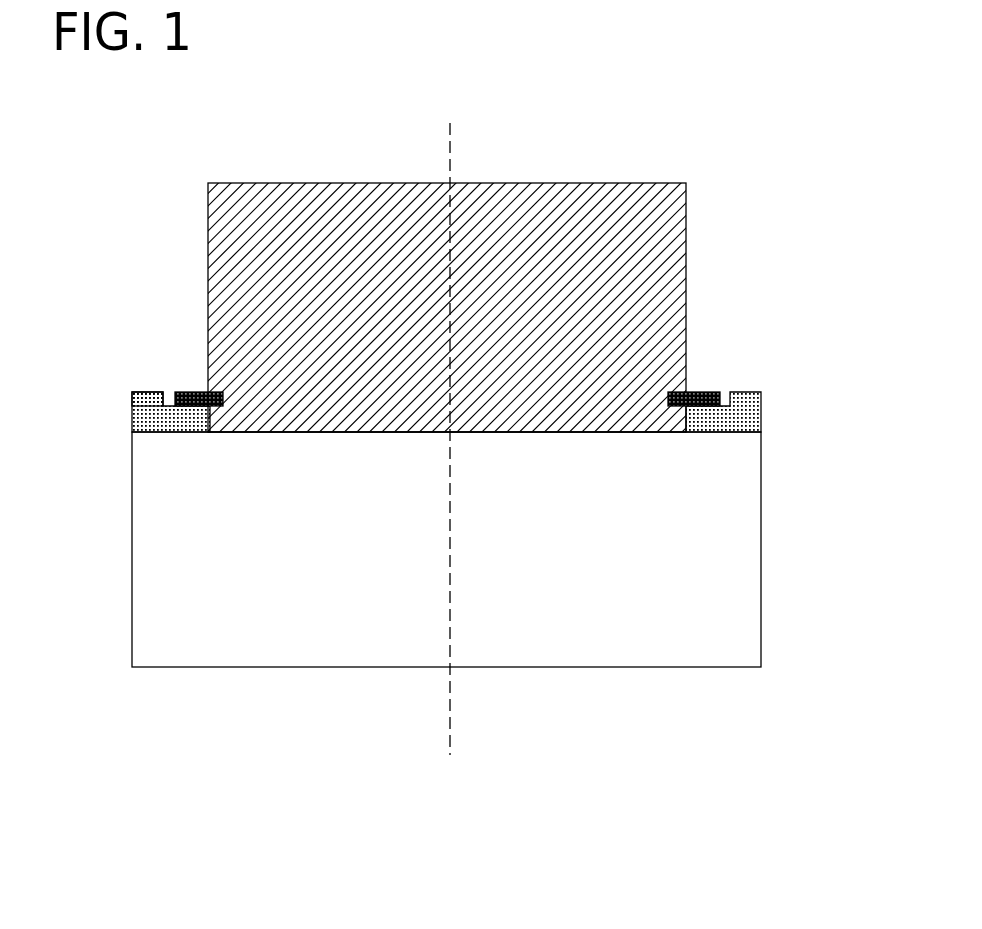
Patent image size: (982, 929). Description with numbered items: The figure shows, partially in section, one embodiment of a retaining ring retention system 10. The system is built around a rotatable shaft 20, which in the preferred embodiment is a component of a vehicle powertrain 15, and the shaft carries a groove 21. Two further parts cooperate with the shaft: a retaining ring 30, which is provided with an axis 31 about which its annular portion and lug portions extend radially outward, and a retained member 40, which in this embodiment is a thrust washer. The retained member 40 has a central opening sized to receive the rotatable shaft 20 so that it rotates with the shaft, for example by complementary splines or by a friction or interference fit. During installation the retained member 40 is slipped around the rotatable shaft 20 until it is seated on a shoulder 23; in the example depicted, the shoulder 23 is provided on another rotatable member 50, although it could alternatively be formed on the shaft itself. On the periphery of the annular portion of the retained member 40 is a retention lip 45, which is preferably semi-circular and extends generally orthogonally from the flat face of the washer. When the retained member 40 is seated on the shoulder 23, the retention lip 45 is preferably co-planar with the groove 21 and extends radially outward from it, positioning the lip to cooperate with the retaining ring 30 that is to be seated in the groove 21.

The retaining ring retention system 10 is at (120, 295).
The vehicle powertrain 15 is at (634, 446).
The rotatable shaft 20 is at (686, 278).
The groove 21 is at (703, 392).
The shoulder 23 is at (728, 431).
The retaining ring 30 is at (185, 392).
The axis 31 is at (450, 705).
The retained member 40 is at (133, 424).
The retention lip 45 is at (148, 400).
The rotatable member 50 is at (153, 583).